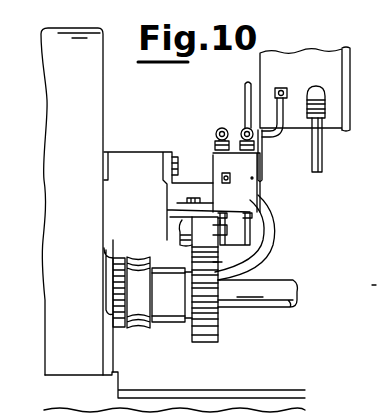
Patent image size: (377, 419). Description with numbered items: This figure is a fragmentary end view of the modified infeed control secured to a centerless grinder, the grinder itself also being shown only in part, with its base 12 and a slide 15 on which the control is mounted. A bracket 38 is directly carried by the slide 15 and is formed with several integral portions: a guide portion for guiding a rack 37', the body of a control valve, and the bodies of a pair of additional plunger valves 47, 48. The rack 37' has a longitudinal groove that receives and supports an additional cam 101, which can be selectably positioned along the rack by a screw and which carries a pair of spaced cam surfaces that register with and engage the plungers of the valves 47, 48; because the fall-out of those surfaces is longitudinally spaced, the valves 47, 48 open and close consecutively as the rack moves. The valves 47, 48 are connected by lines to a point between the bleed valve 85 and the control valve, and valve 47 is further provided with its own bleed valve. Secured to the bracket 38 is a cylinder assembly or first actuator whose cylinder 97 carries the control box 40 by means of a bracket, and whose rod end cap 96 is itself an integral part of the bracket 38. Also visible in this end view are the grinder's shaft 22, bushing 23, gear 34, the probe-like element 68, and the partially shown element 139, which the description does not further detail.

The base 12 is at (58, 395).
The slide 15 is at (62, 215).
The shaft 22 is at (277, 300).
The bushing 23 is at (172, 307).
The gear 34 is at (213, 322).
The rack 37' is at (154, 227).
The bracket 38 is at (170, 150).
The control box 40 is at (267, 65).
The plunger valve 47 is at (218, 148).
The plunger valve 48 is at (255, 165).
The probe 68 is at (323, 159).
The bleed valve 85 is at (286, 90).
The rod end cap 96 is at (250, 268).
The cylinder 97 is at (270, 233).
The cam 101 is at (245, 255).
The element 139 is at (369, 282).